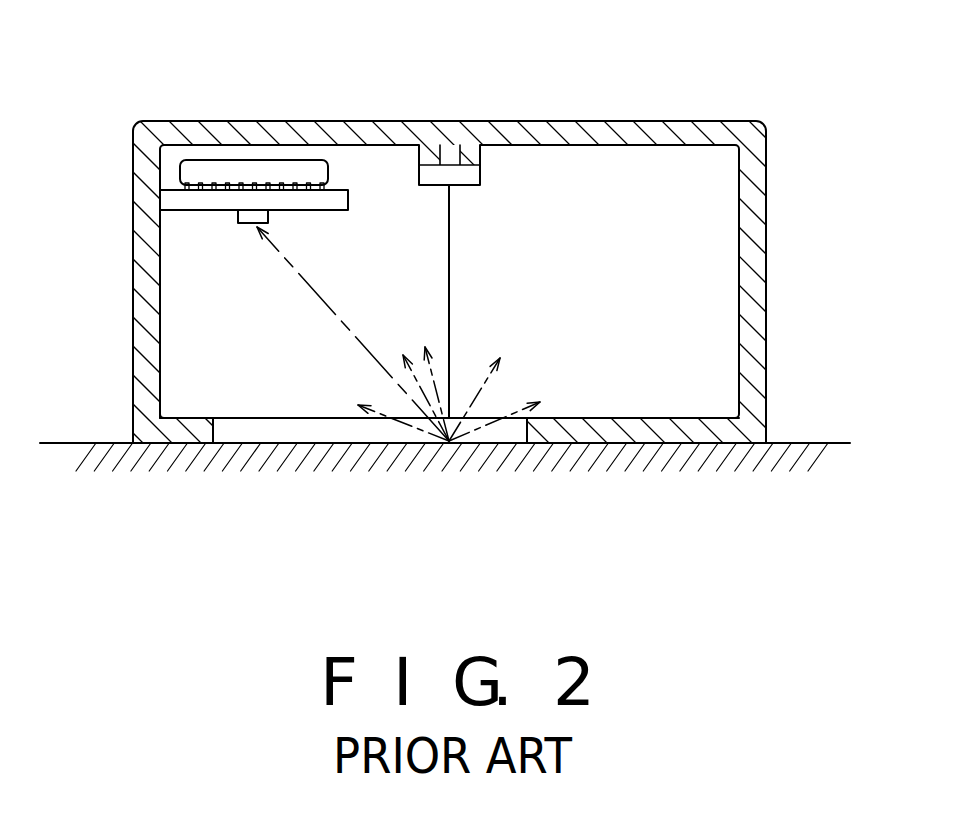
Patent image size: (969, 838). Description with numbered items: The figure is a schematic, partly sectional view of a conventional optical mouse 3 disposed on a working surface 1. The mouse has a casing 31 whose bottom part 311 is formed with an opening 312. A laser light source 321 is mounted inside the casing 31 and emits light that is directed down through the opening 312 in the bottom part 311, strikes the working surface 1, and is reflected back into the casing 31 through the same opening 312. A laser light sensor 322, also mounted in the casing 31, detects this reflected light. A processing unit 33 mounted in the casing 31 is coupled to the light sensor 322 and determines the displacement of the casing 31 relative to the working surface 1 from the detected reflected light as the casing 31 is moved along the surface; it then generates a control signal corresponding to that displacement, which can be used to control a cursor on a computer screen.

The working surface 1 is at (110, 442).
The conventional optical mouse 3 is at (484, 259).
The casing 31 is at (520, 121).
The bottom part 311 is at (713, 444).
The opening 312 is at (510, 432).
The laser light source 321 is at (448, 157).
The laser light sensor 322 is at (240, 222).
The processing unit 33 is at (212, 168).